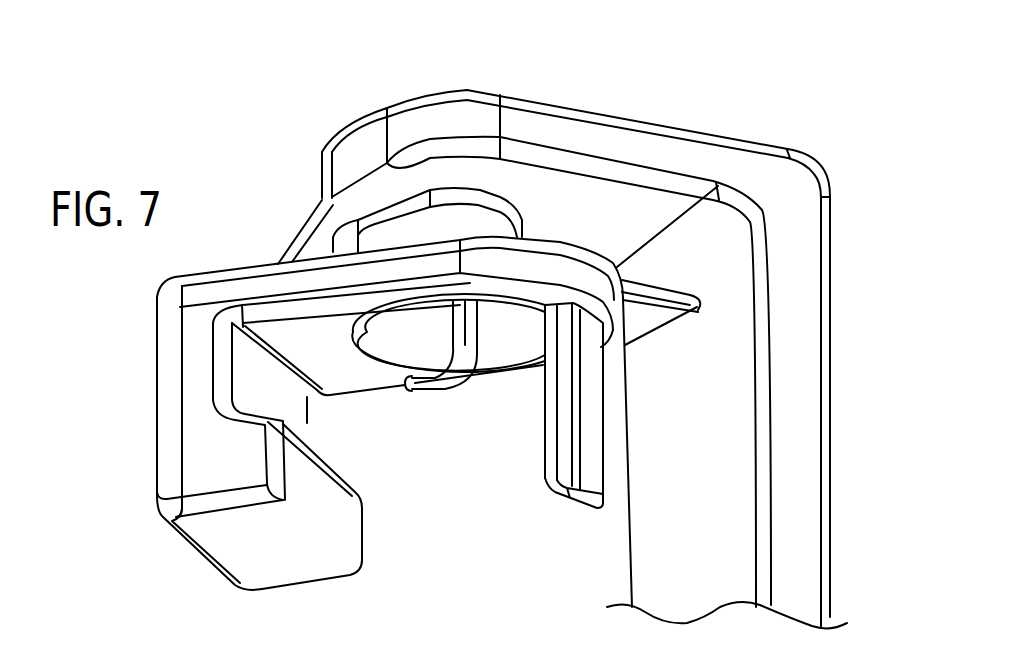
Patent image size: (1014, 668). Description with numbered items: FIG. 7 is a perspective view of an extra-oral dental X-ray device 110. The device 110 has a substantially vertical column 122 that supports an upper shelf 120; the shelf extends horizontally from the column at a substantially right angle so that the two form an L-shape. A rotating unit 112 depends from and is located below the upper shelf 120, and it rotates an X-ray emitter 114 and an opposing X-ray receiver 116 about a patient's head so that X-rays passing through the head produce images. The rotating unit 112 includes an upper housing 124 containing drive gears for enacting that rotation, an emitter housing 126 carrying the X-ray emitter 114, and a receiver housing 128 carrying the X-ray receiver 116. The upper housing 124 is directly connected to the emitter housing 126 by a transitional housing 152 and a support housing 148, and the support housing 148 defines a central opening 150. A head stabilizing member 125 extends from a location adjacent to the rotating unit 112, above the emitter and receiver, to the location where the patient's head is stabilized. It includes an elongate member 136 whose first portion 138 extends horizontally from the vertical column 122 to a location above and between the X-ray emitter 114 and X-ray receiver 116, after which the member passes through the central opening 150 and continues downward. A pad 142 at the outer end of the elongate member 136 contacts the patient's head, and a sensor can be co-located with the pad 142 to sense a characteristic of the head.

The X-ray device 110 is at (742, 82).
The rotating unit 112 is at (215, 168).
The X-ray emitter 114 is at (350, 527).
The X-ray receiver 116 is at (547, 462).
The upper shelf 120 is at (587, 128).
The substantially vertical column 122 is at (793, 430).
The upper housing 124 is at (288, 175).
The head stabilizing member 125 is at (680, 263).
The emitter housing 126 is at (167, 443).
The receiver housing 128 is at (596, 400).
The elongate member 136 is at (685, 292).
The first portion 138 is at (697, 300).
The pad 142 is at (435, 380).
The support housing 148 is at (318, 282).
The central opening 150 is at (503, 322).
The transitional housing 152 is at (330, 238).